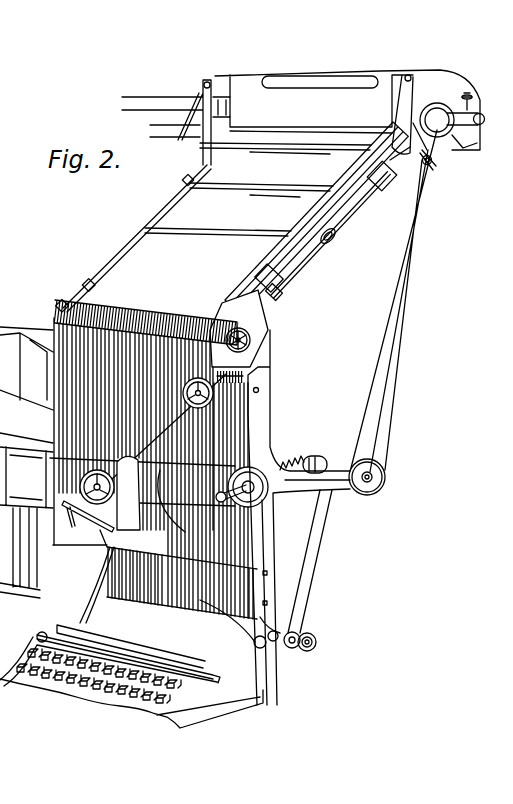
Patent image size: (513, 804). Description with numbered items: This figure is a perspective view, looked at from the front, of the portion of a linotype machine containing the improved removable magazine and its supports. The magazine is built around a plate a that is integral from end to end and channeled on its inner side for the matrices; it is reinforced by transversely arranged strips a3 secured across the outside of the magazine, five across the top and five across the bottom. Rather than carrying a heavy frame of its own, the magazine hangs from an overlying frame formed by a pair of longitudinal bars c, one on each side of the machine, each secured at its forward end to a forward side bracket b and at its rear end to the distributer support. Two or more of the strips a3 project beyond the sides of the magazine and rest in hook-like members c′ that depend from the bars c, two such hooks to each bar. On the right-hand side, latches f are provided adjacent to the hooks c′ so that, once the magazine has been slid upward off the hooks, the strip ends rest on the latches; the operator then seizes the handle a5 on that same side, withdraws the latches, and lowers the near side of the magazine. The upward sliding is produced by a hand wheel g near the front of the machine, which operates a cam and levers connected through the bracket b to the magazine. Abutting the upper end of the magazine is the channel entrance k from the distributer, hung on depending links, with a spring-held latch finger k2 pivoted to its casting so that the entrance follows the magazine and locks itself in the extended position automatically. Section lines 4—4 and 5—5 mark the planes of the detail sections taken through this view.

The magazine frame head 5 is at (282, 165).
The plate a is at (272, 175).
The transverse strips a3 is at (292, 187).
The magazine body 4 is at (110, 367).
The longitudinal bars c is at (382, 196).
The channel entrance k is at (430, 161).
The latch finger k2 is at (384, 190).
The handle a5 is at (336, 240).
The latches f is at (280, 268).
The hook-like members c′ is at (281, 288).
The forward side brackets b is at (260, 334).
The hand wheel g is at (250, 356).